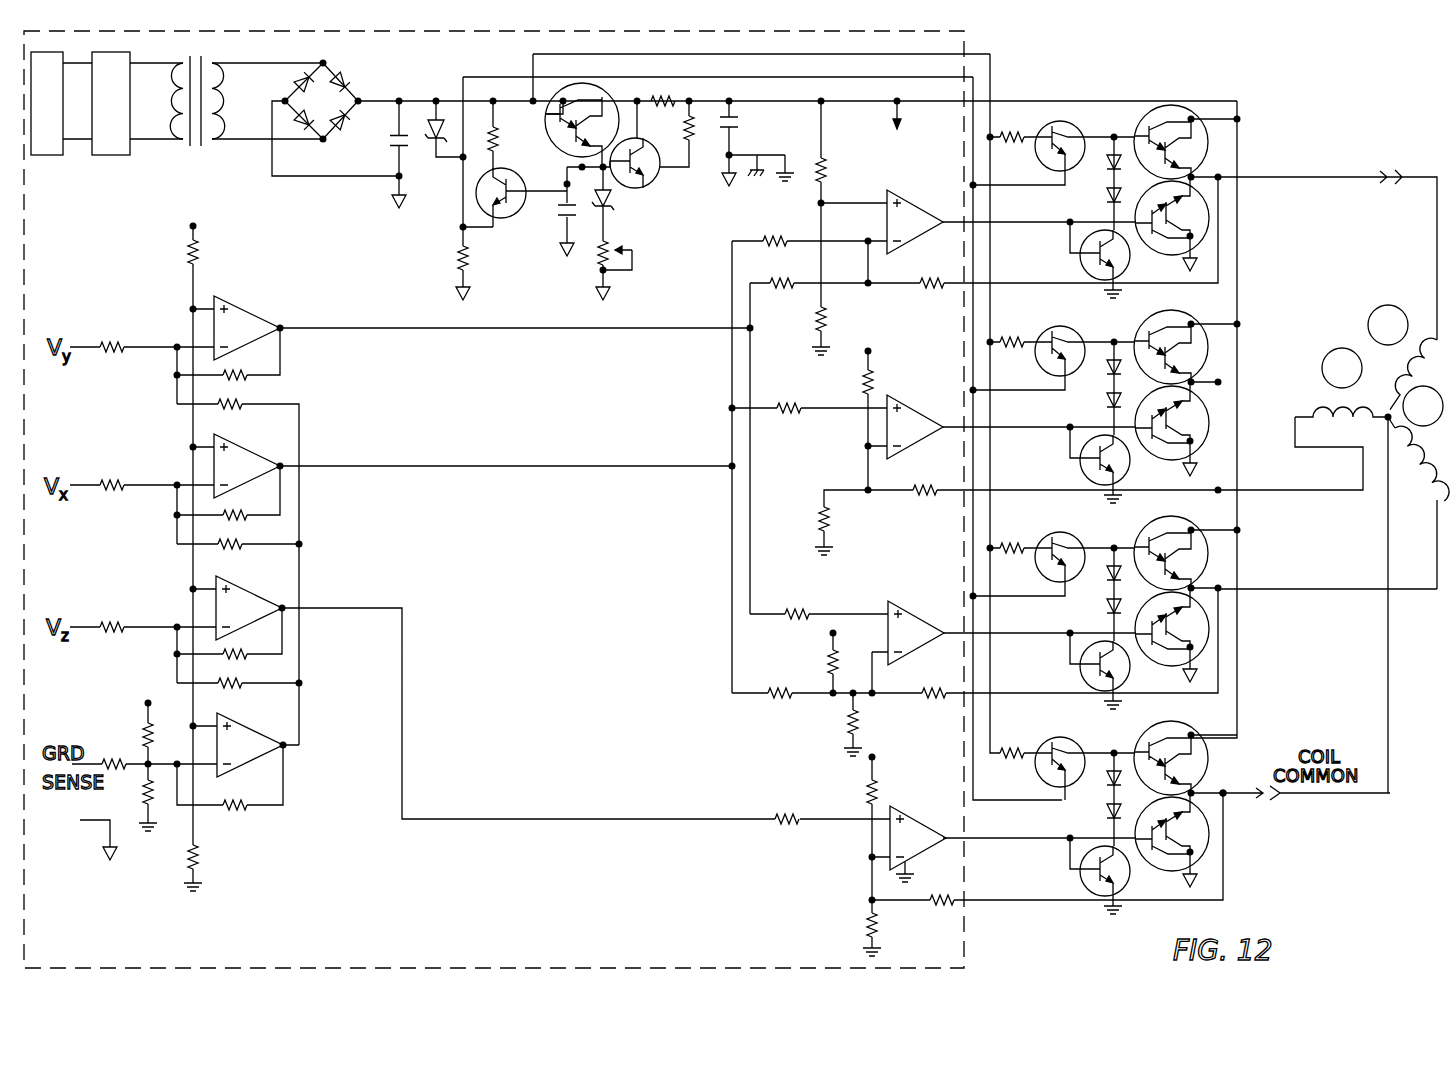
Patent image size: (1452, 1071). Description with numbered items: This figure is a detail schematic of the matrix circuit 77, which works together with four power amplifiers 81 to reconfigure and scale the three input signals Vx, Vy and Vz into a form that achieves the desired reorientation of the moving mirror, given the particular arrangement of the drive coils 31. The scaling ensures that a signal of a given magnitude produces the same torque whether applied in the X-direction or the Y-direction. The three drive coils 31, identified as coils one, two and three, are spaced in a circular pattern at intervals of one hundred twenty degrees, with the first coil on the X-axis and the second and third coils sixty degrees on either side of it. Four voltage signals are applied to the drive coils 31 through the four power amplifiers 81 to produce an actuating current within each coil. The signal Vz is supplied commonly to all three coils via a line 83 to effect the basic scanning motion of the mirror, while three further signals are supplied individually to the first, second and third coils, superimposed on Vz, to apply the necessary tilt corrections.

The matrix circuit 77 is at (432, 80).
The power amplifier 81 is at (1100, 124).
The drive coil 31 is at (1390, 362).
The line 83 is at (1388, 679).